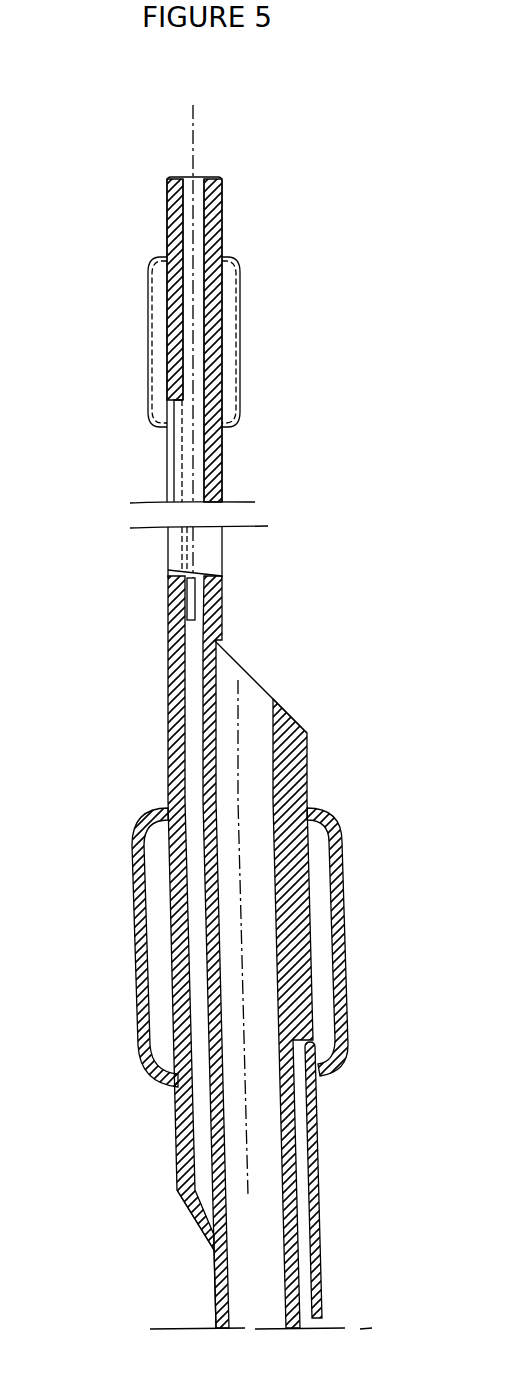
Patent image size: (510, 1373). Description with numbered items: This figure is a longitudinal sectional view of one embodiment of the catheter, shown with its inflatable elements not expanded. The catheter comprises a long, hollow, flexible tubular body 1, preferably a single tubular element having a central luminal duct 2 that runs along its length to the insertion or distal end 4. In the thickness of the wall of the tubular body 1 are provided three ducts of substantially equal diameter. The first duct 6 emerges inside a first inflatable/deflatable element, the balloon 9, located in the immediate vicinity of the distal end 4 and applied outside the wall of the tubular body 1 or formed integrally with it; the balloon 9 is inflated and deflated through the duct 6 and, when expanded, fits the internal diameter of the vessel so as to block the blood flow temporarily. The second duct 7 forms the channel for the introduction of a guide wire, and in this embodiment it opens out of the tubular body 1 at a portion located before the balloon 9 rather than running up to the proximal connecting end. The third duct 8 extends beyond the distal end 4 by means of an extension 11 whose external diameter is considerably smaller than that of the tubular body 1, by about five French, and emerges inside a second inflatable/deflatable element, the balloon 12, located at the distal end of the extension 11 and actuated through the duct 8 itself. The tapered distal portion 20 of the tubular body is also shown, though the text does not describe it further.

The tubular body 1 is at (176, 1100).
The central luminal duct 2 is at (255, 768).
The distal end 4 is at (250, 671).
The first duct 6 is at (300, 1108).
The second duct 7 is at (200, 213).
The third duct 8 is at (172, 455).
The first inflatable/deflatable element (balloon) 9 is at (137, 925).
The extension 11 is at (222, 461).
The second inflatable/deflatable element (balloon) 12 is at (238, 318).
The distal end taper 20 is at (195, 1220).